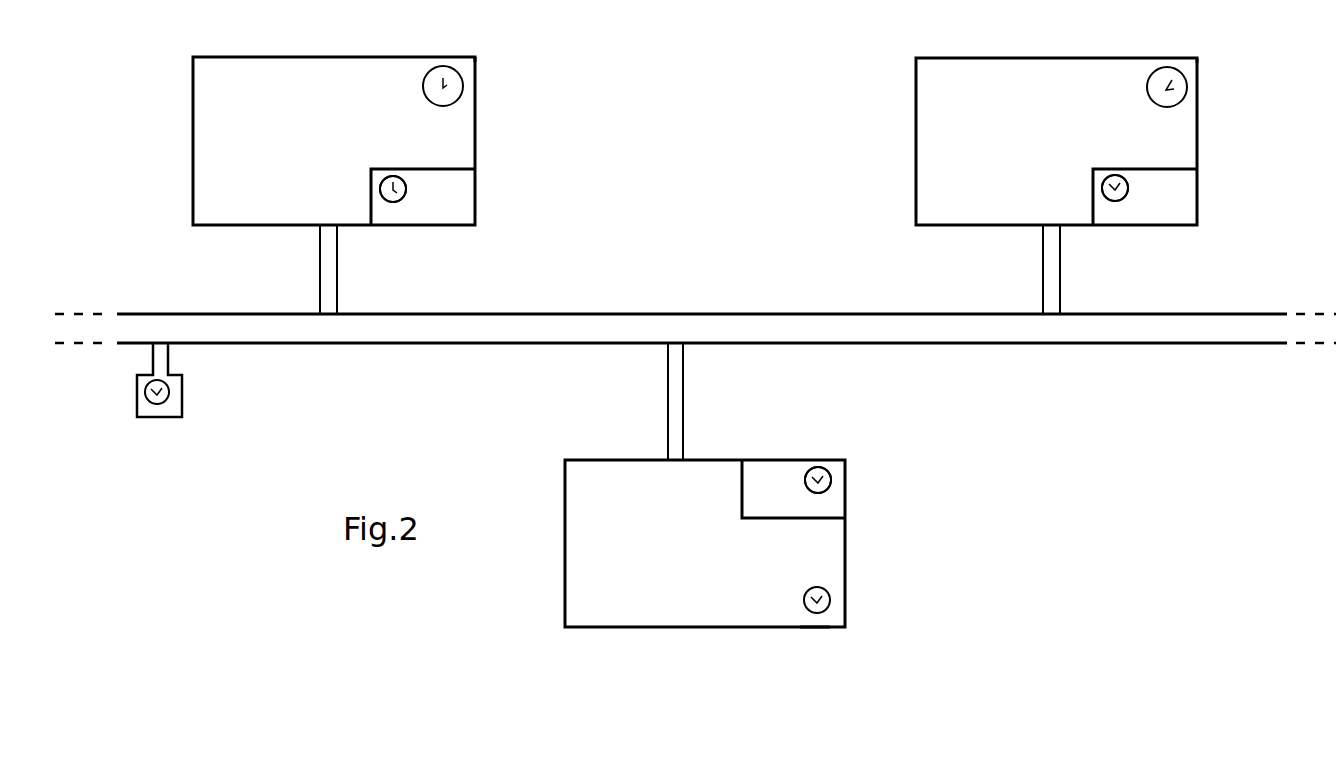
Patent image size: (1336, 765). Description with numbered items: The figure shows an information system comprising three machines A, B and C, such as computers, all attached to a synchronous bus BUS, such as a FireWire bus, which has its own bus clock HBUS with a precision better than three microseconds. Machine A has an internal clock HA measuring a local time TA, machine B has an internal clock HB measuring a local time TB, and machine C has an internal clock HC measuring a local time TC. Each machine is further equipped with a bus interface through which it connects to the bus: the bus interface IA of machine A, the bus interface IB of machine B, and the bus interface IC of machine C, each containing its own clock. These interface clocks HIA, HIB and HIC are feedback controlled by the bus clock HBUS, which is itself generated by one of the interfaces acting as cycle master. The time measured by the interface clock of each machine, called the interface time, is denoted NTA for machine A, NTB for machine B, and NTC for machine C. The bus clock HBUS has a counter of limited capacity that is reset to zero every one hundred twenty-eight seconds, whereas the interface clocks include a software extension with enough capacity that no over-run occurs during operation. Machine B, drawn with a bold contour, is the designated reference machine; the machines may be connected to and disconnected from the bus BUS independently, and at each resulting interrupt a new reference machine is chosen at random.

The machine A is at (334, 185).
The machine B is at (705, 485).
The machine C is at (1056, 186).
The synchronous bus BUS is at (1232, 313).
The bus clock HBUS is at (182, 397).
The internal clock of machine A HA is at (425, 84).
The local time of machine A TA is at (470, 61).
The bus interface of machine A IA is at (452, 173).
The interface time of machine A NTA is at (408, 187).
The interface clock of machine A HIA is at (385, 202).
The internal clock of machine C HC is at (1150, 78).
The local time of machine C TC is at (1192, 64).
The bus interface of machine C IC is at (1170, 168).
The interface time of machine C NTC is at (1130, 189).
The interface clock of machine C HIC is at (1108, 201).
The internal clock of machine B HB is at (820, 587).
The local time of machine B TB is at (816, 620).
The bus interface of machine B IB is at (846, 500).
The interface time of machine B NTB is at (802, 469).
The interface clock of machine B HIB is at (830, 468).